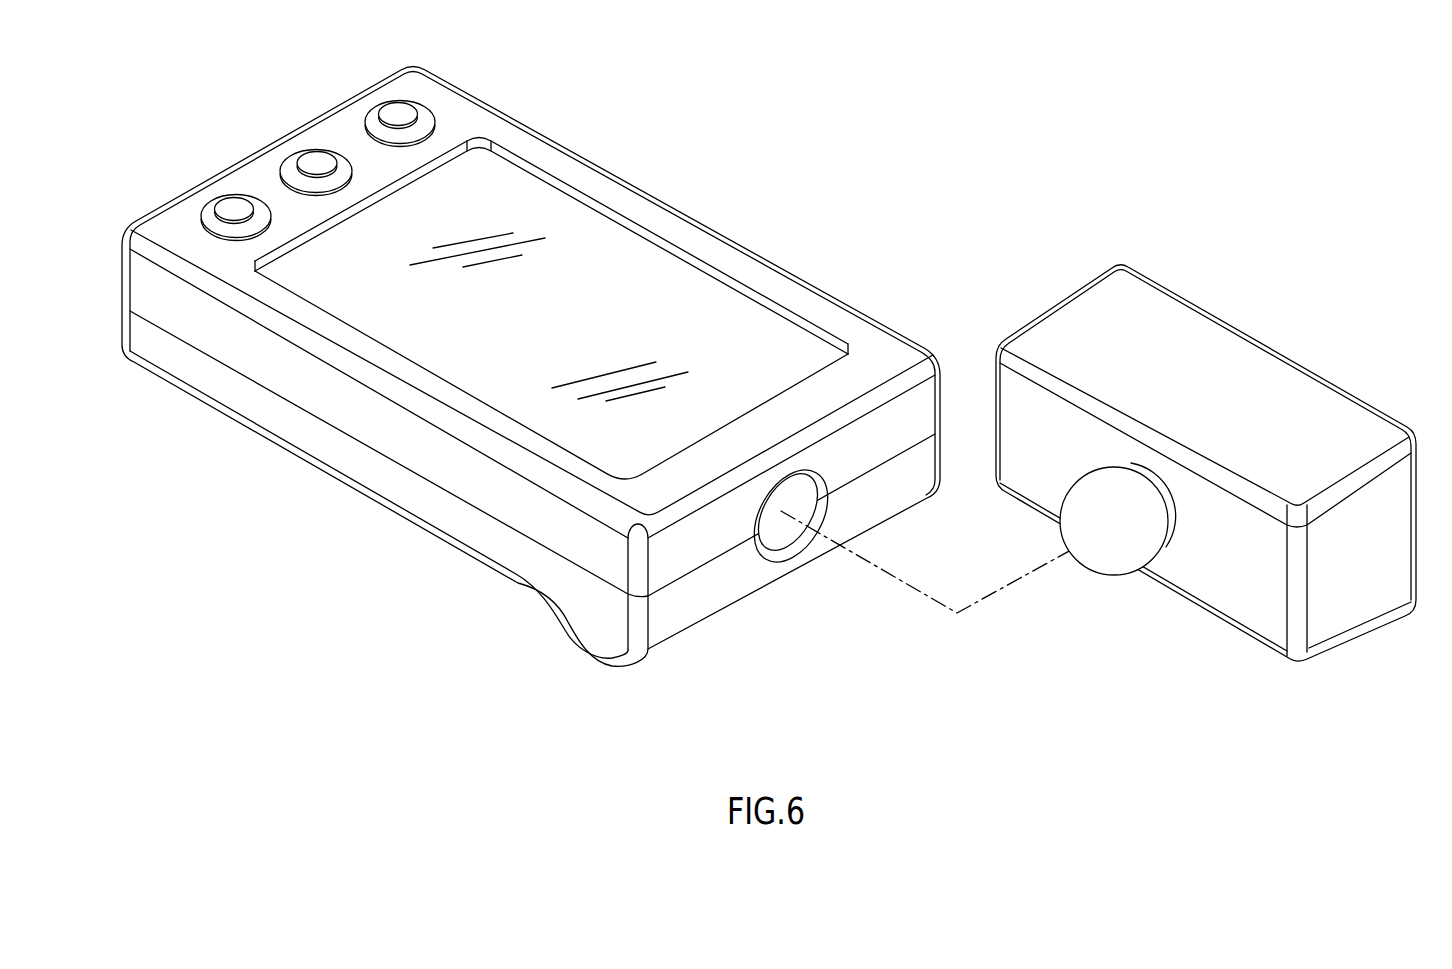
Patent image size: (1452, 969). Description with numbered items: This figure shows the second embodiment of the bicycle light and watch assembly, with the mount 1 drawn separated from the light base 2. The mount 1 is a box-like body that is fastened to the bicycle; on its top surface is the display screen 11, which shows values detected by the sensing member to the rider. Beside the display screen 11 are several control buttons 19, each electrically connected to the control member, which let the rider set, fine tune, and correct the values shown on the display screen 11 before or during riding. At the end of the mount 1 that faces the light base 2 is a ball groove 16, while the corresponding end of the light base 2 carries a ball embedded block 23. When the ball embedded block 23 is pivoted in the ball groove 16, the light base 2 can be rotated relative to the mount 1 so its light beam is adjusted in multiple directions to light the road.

The mount 1 is at (738, 193).
The display screen 11 is at (713, 305).
The control button 19 is at (314, 162).
The ball groove 16 is at (777, 530).
The light base 2 is at (1200, 337).
The ball embedded block 23 is at (1112, 567).